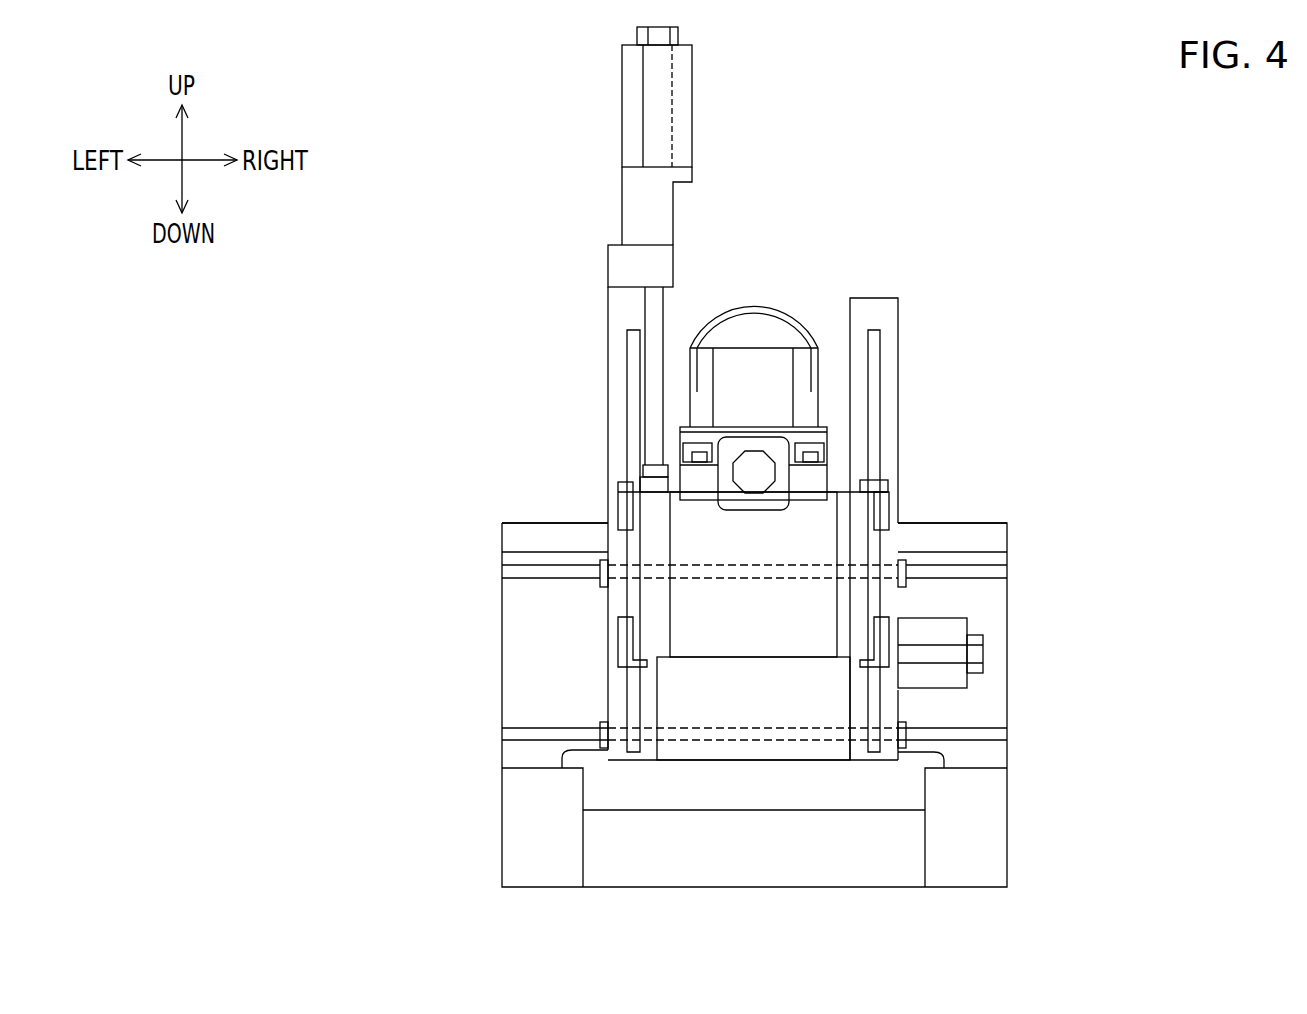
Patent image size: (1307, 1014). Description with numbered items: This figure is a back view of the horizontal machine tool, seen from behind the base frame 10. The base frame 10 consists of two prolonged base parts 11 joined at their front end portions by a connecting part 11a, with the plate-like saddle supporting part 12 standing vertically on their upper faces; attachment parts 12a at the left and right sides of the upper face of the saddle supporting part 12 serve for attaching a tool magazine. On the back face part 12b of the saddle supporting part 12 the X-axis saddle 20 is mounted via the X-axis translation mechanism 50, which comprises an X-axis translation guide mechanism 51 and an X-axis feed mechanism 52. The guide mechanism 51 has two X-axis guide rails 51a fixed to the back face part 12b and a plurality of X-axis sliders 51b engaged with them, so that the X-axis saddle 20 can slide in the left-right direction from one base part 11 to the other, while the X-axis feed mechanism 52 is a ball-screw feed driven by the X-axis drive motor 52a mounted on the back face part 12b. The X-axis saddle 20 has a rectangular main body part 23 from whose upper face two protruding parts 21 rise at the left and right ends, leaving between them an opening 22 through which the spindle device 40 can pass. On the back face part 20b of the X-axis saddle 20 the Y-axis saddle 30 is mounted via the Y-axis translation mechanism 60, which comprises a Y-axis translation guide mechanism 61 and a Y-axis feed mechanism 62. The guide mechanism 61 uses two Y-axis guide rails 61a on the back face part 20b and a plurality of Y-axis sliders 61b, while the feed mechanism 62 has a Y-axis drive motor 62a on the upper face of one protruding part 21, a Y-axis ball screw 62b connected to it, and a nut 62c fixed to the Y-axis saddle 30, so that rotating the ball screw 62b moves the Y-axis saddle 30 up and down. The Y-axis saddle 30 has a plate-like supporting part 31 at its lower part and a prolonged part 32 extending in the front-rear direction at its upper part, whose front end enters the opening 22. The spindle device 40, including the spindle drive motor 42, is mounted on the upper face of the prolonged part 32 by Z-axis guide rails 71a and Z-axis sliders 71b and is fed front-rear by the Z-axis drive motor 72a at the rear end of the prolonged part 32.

The base frame 10 is at (1020, 691).
The base part 11 is at (515, 828).
The connecting part 11a is at (625, 862).
The saddle supporting part 12 is at (987, 597).
The attachment part 12a is at (515, 520).
The back face part 12b is at (985, 712).
The X-axis saddle 20 is at (915, 384).
The back face part 20b is at (893, 395).
The protruding part 21 is at (618, 303).
The opening 22 is at (850, 308).
The main body part 23 is at (687, 690).
The Y-axis saddle 30 is at (755, 672).
The supporting part 31 is at (800, 640).
The prolonged part 32 is at (745, 435).
The spindle device 40 is at (818, 316).
The spindle drive motor 42 is at (775, 327).
The X-axis translation mechanism 50 is at (571, 658).
The X-axis translation guide mechanism 51 is at (590, 602).
The X-axis guide rail 51a is at (512, 573).
The X-axis slider 51b is at (578, 578).
The X-axis feed mechanism 52 is at (951, 702).
The X-axis drive motor 52a is at (948, 630).
The Y-axis translation mechanism 60 is at (670, 296).
The Y-axis translation guide mechanism 61 is at (608, 354).
The Y-axis guide rail 61a is at (633, 370).
The Y-axis slider 61b is at (620, 487).
The Y-axis feed mechanism 62 is at (708, 143).
The Y-axis drive motor 62a is at (688, 90).
The Y-axis ball screw 62b is at (663, 335).
The nut 62c is at (655, 495).
The Z-axis guide rail 71a is at (690, 460).
The Z-axis slider 71b is at (690, 445).
The Z-axis drive motor 72a is at (750, 513).